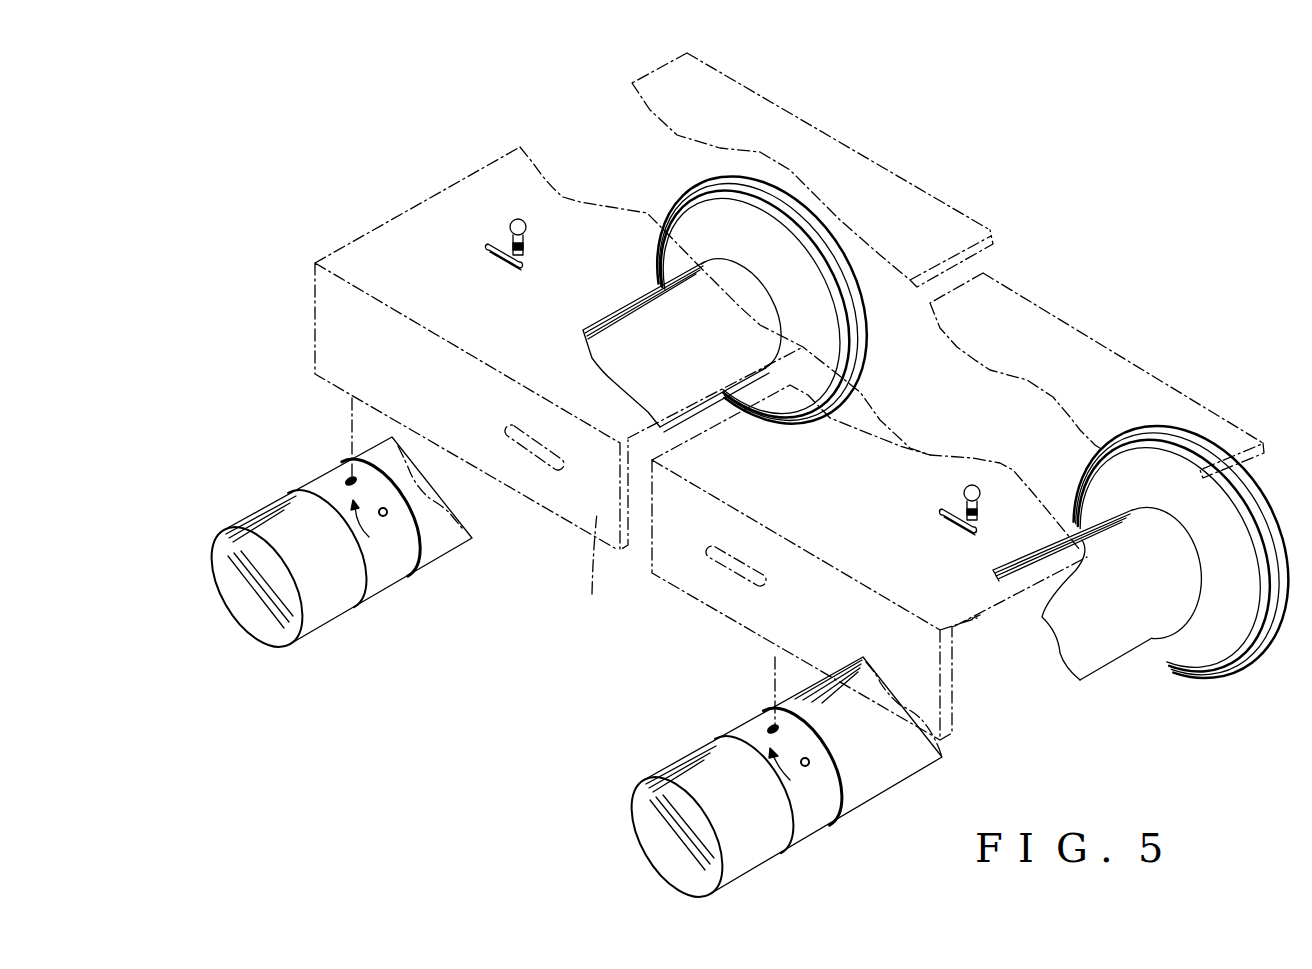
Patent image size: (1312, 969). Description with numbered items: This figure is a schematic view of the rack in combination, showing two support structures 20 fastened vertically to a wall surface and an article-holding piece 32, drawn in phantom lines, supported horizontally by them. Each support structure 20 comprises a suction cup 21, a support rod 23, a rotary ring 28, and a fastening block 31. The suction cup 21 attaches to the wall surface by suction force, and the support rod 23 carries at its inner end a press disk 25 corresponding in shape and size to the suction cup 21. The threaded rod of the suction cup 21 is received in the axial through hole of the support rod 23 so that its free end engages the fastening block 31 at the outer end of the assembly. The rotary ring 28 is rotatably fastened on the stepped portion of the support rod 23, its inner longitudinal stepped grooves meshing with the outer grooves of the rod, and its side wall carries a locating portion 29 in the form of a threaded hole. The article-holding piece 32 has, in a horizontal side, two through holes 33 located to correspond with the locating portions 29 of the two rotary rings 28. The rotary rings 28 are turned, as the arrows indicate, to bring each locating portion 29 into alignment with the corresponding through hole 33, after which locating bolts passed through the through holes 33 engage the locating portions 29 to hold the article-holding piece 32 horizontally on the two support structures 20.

The support structure 20 is at (664, 654).
The suction cup 21 is at (860, 358).
The support rod 23 is at (440, 537).
The press disk 25 is at (802, 318).
The rotary ring 28 is at (393, 557).
The locating portion 29 is at (350, 478).
The fastening block 31 is at (338, 593).
The article-holding piece 32 is at (592, 568).
The through hole 33 is at (957, 524).